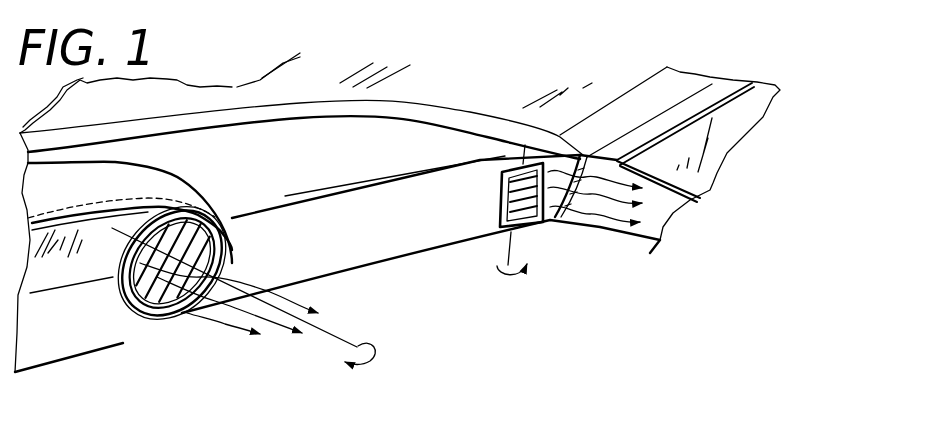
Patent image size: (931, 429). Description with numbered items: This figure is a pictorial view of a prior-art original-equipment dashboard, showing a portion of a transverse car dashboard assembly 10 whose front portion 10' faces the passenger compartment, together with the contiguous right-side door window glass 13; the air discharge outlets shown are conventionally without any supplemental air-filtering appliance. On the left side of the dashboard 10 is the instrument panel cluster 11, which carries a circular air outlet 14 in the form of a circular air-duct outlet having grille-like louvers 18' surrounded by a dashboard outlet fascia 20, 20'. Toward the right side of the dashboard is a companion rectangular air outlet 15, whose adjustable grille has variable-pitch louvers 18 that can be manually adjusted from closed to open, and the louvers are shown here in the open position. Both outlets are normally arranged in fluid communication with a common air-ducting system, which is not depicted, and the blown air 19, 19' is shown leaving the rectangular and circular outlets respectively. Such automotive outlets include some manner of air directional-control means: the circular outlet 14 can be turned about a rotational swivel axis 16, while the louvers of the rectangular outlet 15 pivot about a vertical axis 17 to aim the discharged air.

The car dashboard assembly 10 is at (301, 134).
The car dashboard assembly front portion 10' is at (421, 234).
The instrument panel cluster 11 is at (172, 193).
The door window glass 13 is at (783, 105).
The circular air outlet 14 is at (248, 230).
The rectangular air outlet 15 is at (468, 160).
The swivel axis 16 is at (333, 318).
The vertical axis 17 is at (517, 250).
The louvers of adjustable grille 18 is at (475, 195).
The louvers of adjustable grille 18' is at (151, 262).
The blown air 19 is at (665, 207).
The air flow from round vent 19' is at (229, 324).
The dash board outlet fascia 20 is at (469, 261).
The round vent pivot 20' is at (92, 361).